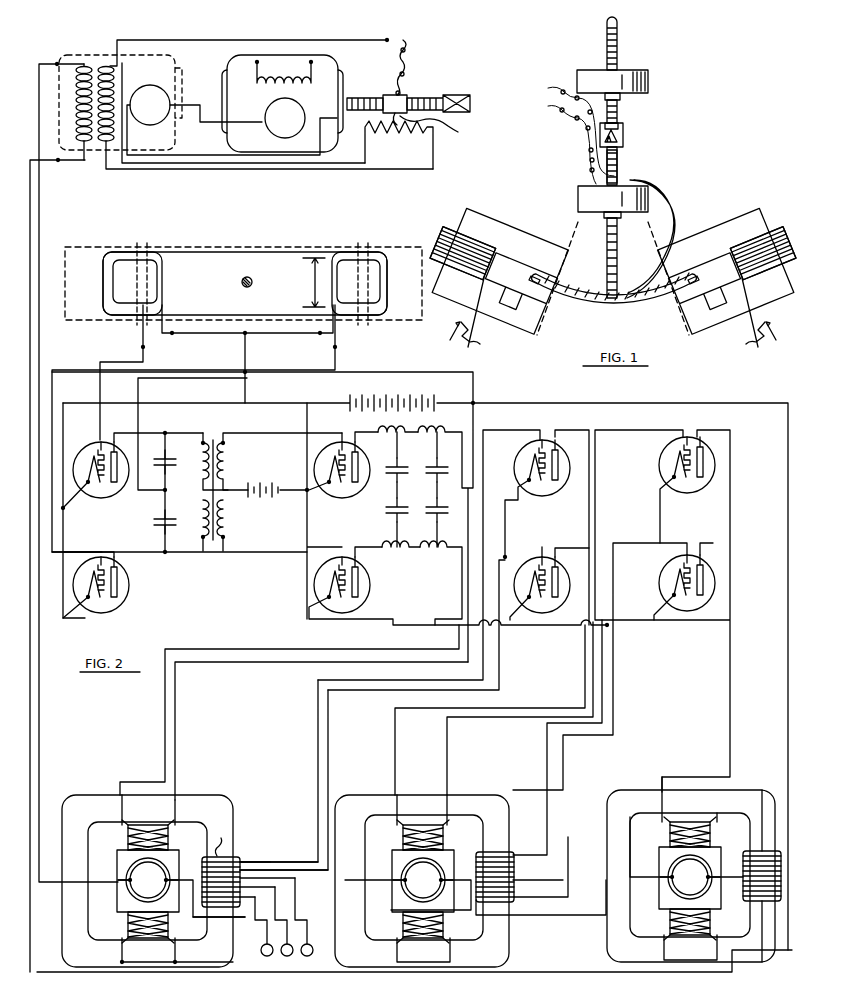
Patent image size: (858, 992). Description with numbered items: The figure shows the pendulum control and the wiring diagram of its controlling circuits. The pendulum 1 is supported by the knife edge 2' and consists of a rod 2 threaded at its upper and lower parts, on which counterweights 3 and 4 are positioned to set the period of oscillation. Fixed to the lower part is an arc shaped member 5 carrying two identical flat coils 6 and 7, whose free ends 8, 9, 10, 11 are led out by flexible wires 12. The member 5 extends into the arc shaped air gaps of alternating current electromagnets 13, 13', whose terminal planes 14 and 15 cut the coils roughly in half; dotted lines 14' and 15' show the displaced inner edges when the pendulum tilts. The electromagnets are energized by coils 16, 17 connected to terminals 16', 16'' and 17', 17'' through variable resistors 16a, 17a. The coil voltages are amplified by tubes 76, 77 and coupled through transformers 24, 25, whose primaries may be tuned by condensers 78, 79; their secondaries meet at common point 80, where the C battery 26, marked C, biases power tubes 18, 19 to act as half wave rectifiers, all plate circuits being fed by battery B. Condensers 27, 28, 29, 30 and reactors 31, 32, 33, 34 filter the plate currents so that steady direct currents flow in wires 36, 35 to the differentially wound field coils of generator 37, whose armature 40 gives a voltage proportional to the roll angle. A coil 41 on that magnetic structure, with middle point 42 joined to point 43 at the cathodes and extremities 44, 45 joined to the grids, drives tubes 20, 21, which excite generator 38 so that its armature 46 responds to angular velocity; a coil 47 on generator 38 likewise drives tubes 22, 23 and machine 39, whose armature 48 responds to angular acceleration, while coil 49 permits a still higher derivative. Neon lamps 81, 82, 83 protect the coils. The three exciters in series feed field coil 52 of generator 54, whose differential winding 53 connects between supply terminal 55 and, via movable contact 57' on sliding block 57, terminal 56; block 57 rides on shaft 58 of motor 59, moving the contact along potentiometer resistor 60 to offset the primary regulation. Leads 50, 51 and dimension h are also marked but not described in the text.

In FIG. 1, the pendulum 1 is at (620, 110).
In FIG. 1, the rod 2 is at (631, 165).
In FIG. 2, the rod 2 is at (256, 270).
In FIG. 1, the knife edge 2' is at (630, 135).
In FIG. 1, the counterweight 3 is at (650, 78).
In FIG. 1, the counterweight 4 is at (575, 198).
In FIG. 1, the arc shaped member 5 is at (612, 303).
In FIG. 1, the flat coil 6 is at (548, 292).
In FIG. 2, the flat coil 6 is at (163, 270).
In FIG. 1, the flat coil 7 is at (672, 292).
In FIG. 2, the flat coil 7 is at (386, 268).
In FIG. 2, the free end of coil 8 is at (145, 347).
In FIG. 2, the free end of coil 9 is at (172, 330).
In FIG. 2, the free end of coil 10 is at (320, 330).
In FIG. 2, the free end of coil 11 is at (337, 347).
In FIG. 1, the flexible wires 12 is at (588, 173).
In FIG. 1, the alternating current electromagnet 13 is at (493, 269).
In FIG. 1, the alternating current electromagnet 13' is at (733, 269).
In FIG. 1, the terminal plane 14 is at (559, 287).
In FIG. 2, the terminal plane 14 is at (130, 281).
In FIG. 2, the dotted line 14' is at (151, 281).
In FIG. 1, the terminal plane 15 is at (676, 287).
In FIG. 2, the terminal plane 15 is at (349, 281).
In FIG. 2, the dotted line 15' is at (374, 281).
In FIG. 1, the energizing coil 16 is at (463, 241).
In FIG. 1, the terminal 16' is at (448, 341).
In FIG. 1, the terminal 16'' is at (474, 323).
In FIG. 1, the variable resistor 16a is at (487, 333).
In FIG. 1, the energizing coil 17 is at (763, 241).
In FIG. 1, the terminal 17' is at (750, 322).
In FIG. 1, the terminal 17'' is at (779, 339).
In FIG. 1, the variable resistor 17a is at (760, 318).
In FIG. 2, the power tube 18 is at (320, 450).
In FIG. 2, the power tube 19 is at (320, 565).
In FIG. 2, the power tube 20 is at (555, 445).
In FIG. 2, the power tube 21 is at (555, 562).
In FIG. 2, the power tube 22 is at (700, 442).
In FIG. 2, the power tube 23 is at (700, 560).
In FIG. 2, the coupling transformer 24 is at (210, 430).
In FIG. 2, the coupling transformer 25 is at (213, 558).
In FIG. 2, the C battery 26 is at (277, 499).
In FIG. 2, the condenser 27 is at (413, 460).
In FIG. 2, the condenser 28 is at (453, 460).
In FIG. 2, the condenser 29 is at (413, 500).
In FIG. 2, the condenser 30 is at (453, 500).
In FIG. 2, the reactor 31 is at (396, 426).
In FIG. 2, the reactor 32 is at (436, 426).
In FIG. 2, the reactor 33 is at (401, 555).
In FIG. 2, the reactor 34 is at (441, 583).
In FIG. 2, the wire 35 is at (282, 662).
In FIG. 2, the wire 36 is at (290, 645).
In FIG. 2, the direct current generator 37 is at (210, 790).
In FIG. 2, the generator 38 is at (490, 790).
In FIG. 2, the generator 39 is at (752, 788).
In FIG. 2, the armature 40 is at (181, 879).
In FIG. 2, the coil 41 is at (224, 843).
In FIG. 2, the middle point of coil 42 is at (265, 882).
In FIG. 2, the point 43 is at (496, 557).
In FIG. 2, the extremity of coil 44 is at (262, 858).
In FIG. 2, the extremity of coil 45 is at (218, 917).
In FIG. 2, the armature 46 is at (408, 878).
In FIG. 2, the coil 47 is at (541, 876).
In FIG. 2, the armature 48 is at (686, 868).
In FIG. 2, the coil 49 is at (762, 876).
In FIG. 2, the supply lead 50 is at (68, 58).
In FIG. 2, the supply lead 51 is at (60, 170).
In FIG. 2, the field coil 52 is at (72, 123).
In FIG. 2, the field winding 53 is at (110, 138).
In FIG. 2, the electric generator 54 is at (232, 120).
In FIG. 2, the supply terminal 55 is at (387, 38).
In FIG. 2, the supply terminal 56 is at (412, 39).
In FIG. 2, the sliding block 57 is at (426, 91).
In FIG. 2, the movable contact 57' is at (442, 128).
In FIG. 2, the shaft 58 is at (360, 95).
In FIG. 2, the motor 59 is at (282, 103).
In FIG. 2, the potentiometer resistor 60 is at (402, 130).
In FIG. 2, the voltage amplification tube 76 is at (73, 450).
In FIG. 2, the voltage amplification tube 77 is at (78, 566).
In FIG. 2, the condenser 78 is at (158, 513).
In FIG. 2, the condenser 79 is at (158, 452).
In FIG. 2, the common point 80 is at (228, 492).
In FIG. 2, the neon lamp 81 is at (264, 926).
In FIG. 2, the neon lamp 82 is at (284, 921).
In FIG. 2, the neon lamp 83 is at (304, 917).
In FIG. 2, the battery B is at (425, 664).
In FIG. 2, the C battery C is at (265, 475).
In FIG. 2, the height dimension h is at (314, 282).